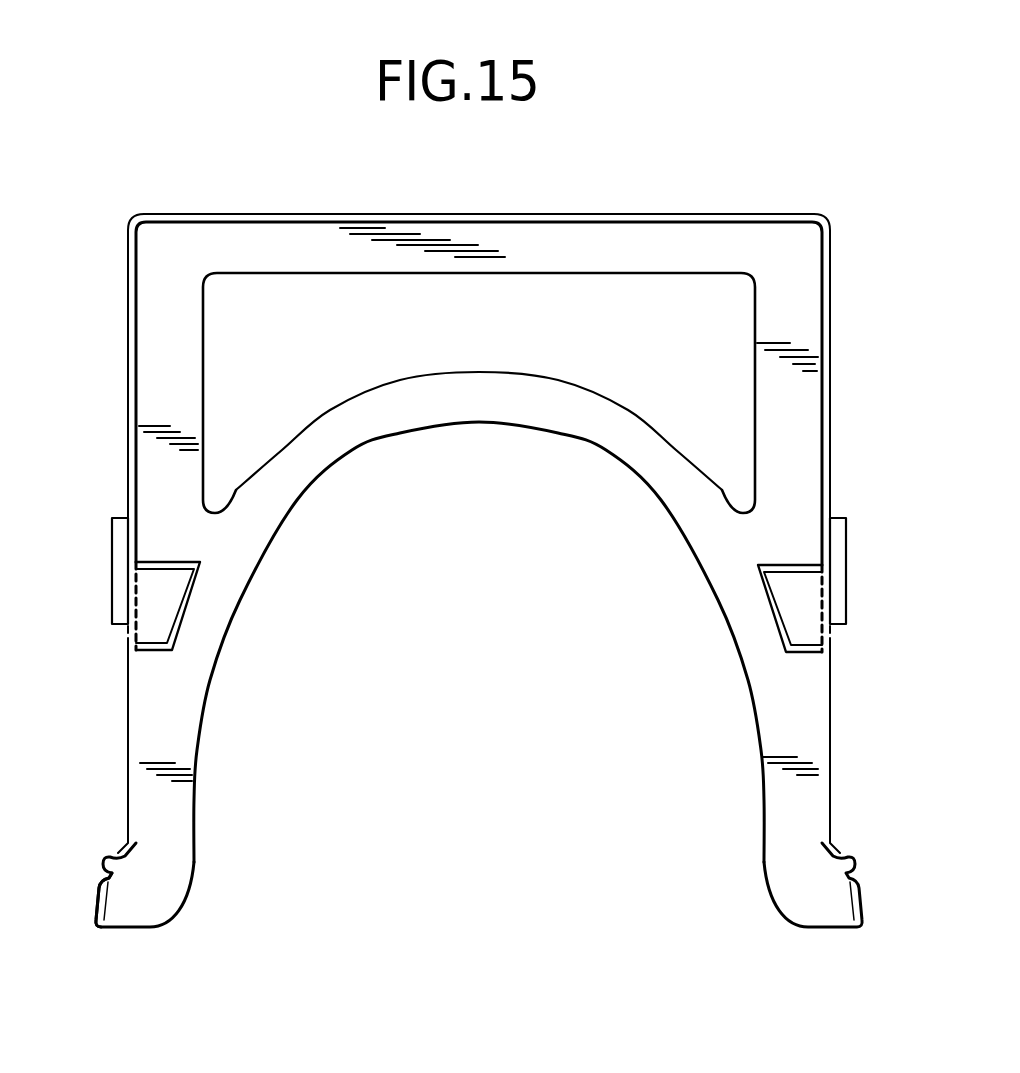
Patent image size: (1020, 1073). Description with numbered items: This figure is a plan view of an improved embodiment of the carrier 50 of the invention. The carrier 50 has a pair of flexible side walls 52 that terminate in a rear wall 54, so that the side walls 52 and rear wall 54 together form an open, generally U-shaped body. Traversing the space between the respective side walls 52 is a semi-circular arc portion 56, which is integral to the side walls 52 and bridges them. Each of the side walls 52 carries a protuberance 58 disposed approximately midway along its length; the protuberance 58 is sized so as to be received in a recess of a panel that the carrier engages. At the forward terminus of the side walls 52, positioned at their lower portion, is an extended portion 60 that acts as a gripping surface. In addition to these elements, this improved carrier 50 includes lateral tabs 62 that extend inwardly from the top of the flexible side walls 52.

The carrier 50 is at (847, 355).
The flexible side walls 52 is at (170, 810).
The rear wall 54 is at (535, 237).
The semi-circular arc portion 56 is at (474, 403).
The protuberance 58 is at (118, 553).
The extended portion 60 is at (98, 899).
The lateral tabs 62 is at (170, 592).